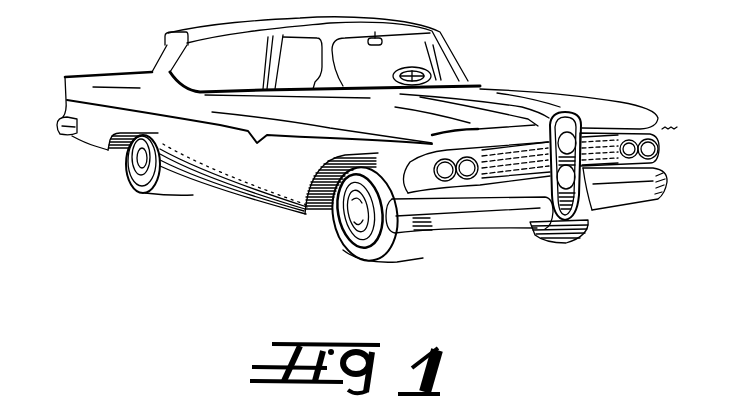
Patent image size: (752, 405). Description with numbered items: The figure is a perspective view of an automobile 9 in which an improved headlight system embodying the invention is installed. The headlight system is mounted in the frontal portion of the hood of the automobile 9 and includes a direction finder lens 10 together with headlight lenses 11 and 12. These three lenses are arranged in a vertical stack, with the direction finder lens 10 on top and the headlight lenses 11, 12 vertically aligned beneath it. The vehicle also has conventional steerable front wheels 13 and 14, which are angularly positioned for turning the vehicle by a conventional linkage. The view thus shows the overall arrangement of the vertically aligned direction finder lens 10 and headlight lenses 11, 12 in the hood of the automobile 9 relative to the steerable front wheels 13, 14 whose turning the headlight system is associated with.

The automobile 9 is at (487, 72).
The direction finder lens 10 is at (580, 117).
The headlight lens 11 is at (548, 132).
The headlight lens 12 is at (583, 170).
The steerable front wheel 13 is at (400, 246).
The steerable front wheel 14 is at (548, 241).